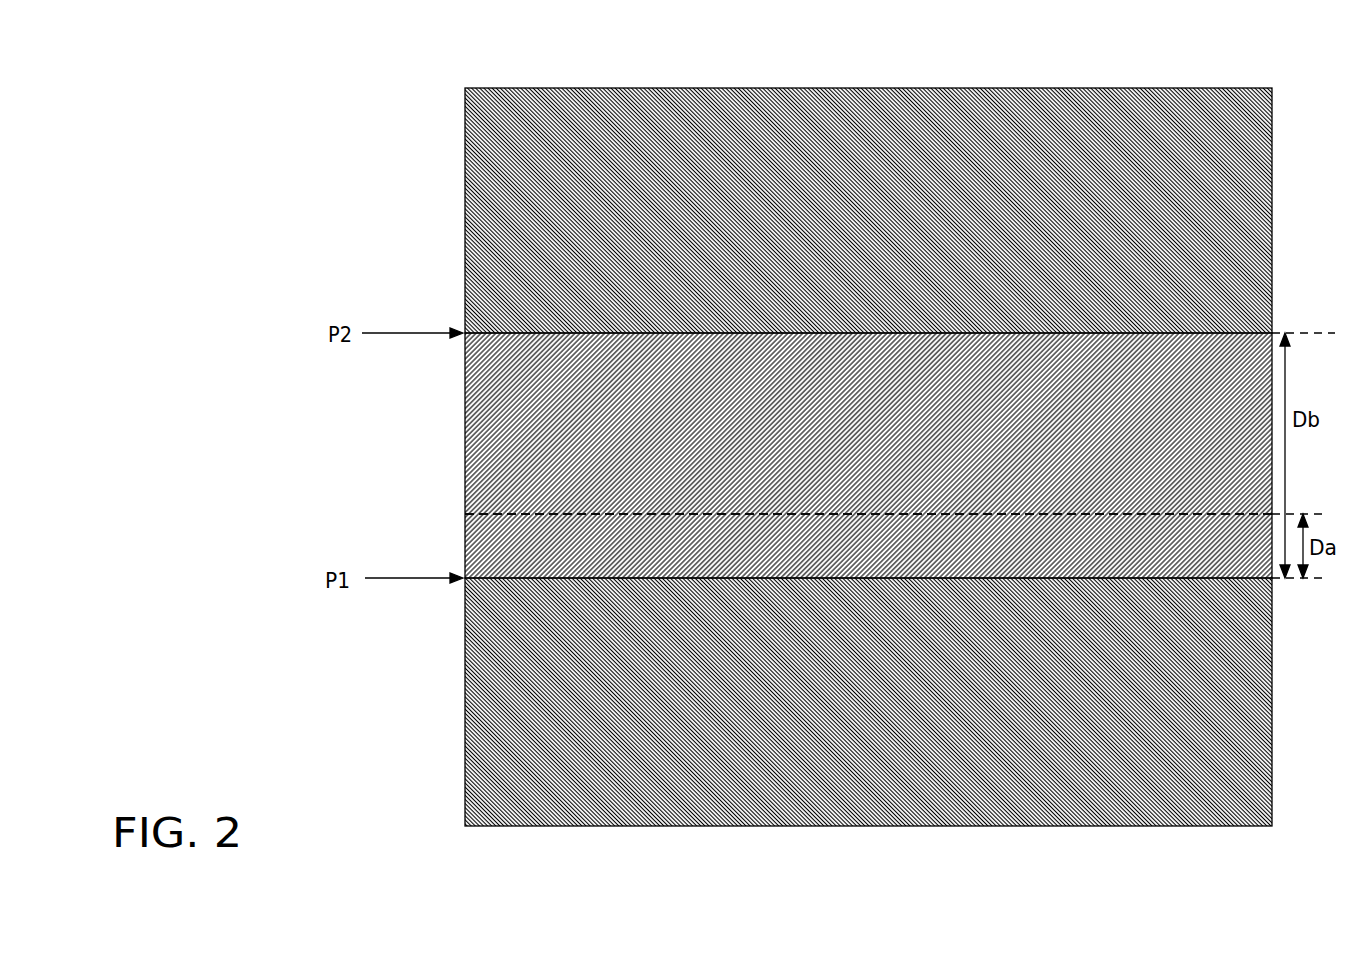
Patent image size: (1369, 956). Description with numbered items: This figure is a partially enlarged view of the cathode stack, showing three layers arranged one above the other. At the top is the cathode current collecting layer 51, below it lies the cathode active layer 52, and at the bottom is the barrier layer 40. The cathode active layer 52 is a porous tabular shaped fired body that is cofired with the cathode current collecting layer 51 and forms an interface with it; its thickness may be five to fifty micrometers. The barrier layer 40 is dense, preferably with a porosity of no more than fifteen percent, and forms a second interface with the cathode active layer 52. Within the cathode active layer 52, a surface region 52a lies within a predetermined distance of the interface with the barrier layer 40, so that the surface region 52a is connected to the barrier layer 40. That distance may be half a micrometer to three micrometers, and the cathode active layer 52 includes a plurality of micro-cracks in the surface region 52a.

The cathode current collecting layer 51 is at (447, 330).
The cathode active layer 52 is at (446, 568).
The surface region 52a is at (902, 533).
The barrier layer 40 is at (447, 588).